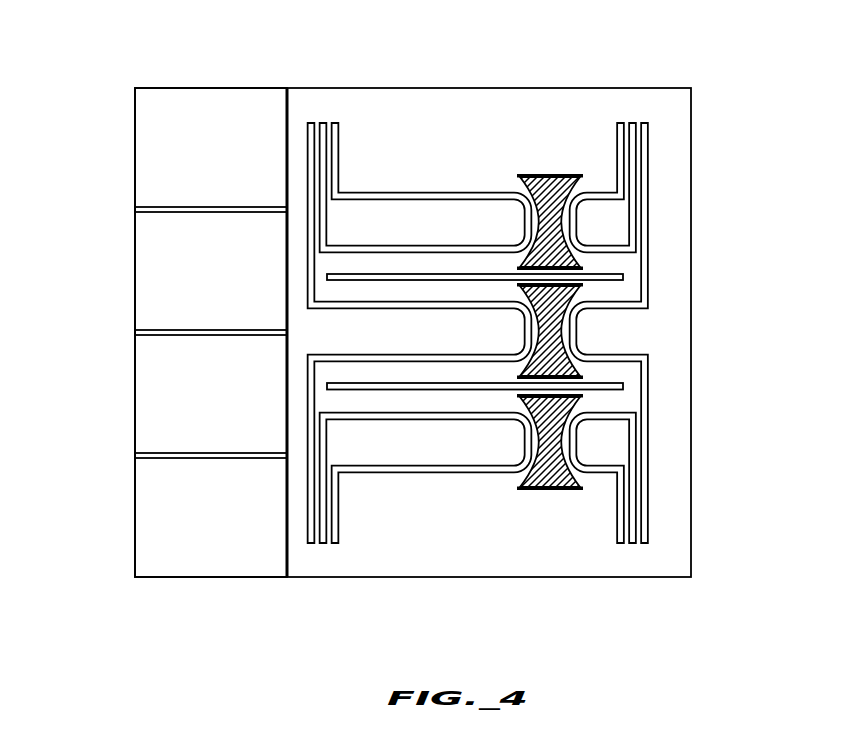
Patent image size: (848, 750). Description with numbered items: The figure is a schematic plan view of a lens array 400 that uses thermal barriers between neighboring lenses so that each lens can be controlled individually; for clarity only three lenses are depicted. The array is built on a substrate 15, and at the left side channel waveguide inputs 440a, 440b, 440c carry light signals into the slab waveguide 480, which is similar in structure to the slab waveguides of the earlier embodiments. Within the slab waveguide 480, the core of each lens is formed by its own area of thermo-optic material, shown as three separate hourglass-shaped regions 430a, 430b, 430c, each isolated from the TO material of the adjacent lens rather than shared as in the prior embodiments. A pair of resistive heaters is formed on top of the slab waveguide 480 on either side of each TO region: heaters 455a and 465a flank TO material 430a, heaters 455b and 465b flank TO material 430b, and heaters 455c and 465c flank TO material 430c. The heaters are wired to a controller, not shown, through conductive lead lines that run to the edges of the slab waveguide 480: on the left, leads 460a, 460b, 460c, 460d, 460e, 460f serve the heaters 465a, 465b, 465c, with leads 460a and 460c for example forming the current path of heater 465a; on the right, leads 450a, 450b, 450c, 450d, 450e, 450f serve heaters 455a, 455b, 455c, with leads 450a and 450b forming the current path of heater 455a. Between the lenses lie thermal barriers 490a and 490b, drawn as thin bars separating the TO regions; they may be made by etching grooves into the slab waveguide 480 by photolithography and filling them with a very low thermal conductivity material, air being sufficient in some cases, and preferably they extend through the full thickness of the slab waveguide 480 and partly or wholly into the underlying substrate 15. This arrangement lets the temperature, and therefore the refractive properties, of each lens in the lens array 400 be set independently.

The lens array 400 is at (98, 106).
The substrate 15 is at (212, 100).
The channel waveguide input 440a is at (150, 453).
The channel waveguide input 440b is at (150, 330).
The channel waveguide input 440c is at (150, 207).
The slab waveguide 480 is at (437, 542).
The conductive lead 460a is at (335, 545).
The conductive lead 460b is at (323, 545).
The conductive lead 460c is at (311, 545).
The conductive lead 460d is at (310, 121).
The conductive lead 460e is at (323, 121).
The conductive lead 460f is at (336, 121).
The conductive lead 450a is at (620, 545).
The conductive lead 450b is at (632, 545).
The conductive lead 450c is at (644, 545).
The conductive lead 450d is at (645, 121).
The conductive lead 450e is at (632, 121).
The conductive lead 450f is at (620, 121).
The resistive heater 465a is at (522, 442).
The resistive heater 465b is at (522, 332).
The resistive heater 465c is at (522, 223).
The resistive heater 455a is at (578, 441).
The resistive heater 455b is at (578, 331).
The resistive heater 455c is at (578, 222).
The TO material 430a is at (557, 491).
The TO material 430b is at (582, 288).
The TO material 430c is at (545, 173).
The thermal barrier 490a is at (437, 383).
The thermal barrier 490b is at (436, 274).